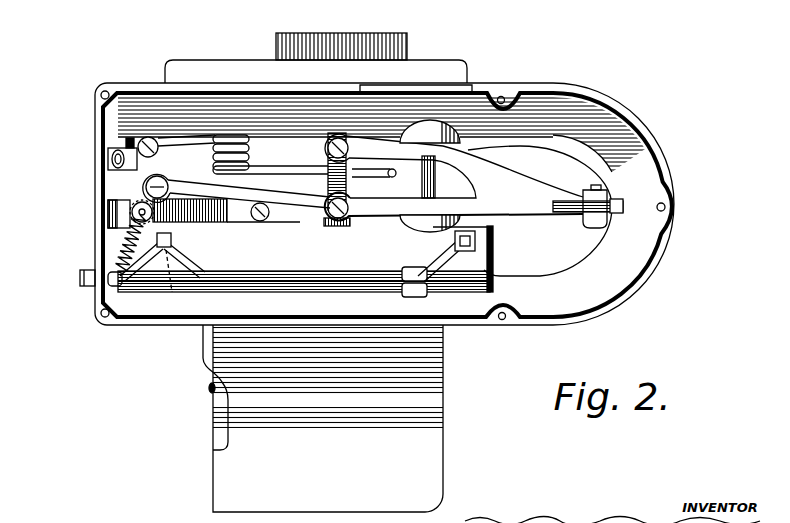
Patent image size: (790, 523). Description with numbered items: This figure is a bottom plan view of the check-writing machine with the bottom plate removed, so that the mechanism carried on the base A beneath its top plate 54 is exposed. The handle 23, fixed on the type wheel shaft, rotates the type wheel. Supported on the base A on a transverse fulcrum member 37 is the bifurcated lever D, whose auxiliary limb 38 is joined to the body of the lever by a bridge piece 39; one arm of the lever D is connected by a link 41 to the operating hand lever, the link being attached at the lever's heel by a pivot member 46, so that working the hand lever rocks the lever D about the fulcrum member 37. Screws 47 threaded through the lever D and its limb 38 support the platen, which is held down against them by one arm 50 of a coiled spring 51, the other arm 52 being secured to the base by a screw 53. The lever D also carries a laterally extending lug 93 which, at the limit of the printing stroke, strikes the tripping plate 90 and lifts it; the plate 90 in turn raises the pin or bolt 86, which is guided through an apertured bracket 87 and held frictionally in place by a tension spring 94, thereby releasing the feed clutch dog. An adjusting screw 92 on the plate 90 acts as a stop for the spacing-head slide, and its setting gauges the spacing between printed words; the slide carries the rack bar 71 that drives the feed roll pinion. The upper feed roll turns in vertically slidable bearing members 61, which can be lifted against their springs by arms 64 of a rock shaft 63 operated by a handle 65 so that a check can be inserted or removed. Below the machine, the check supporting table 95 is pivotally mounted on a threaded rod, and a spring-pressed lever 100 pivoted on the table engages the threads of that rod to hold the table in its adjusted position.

The handle 23 is at (282, 42).
The screws 47 is at (340, 146).
The screw 53 is at (128, 142).
The spring arm 52 is at (164, 150).
The coiled spring 51 is at (250, 158).
The spring arm 50 is at (297, 173).
The laterally extending lug 93 is at (181, 186).
The tripping plate 90 is at (250, 226).
The adjusting screw 92 is at (176, 229).
The pin or bolt 86 is at (136, 206).
The bracket 87 is at (118, 212).
The tension spring 94 is at (117, 244).
The handle 65 is at (90, 290).
The bridge piece 39 is at (476, 170).
The pivot member 46 is at (330, 203).
The lever D is at (507, 200).
The top plate 54 is at (555, 262).
The auxiliary limb 38 is at (410, 156).
The fulcrum member 37 is at (436, 178).
The link 41 is at (602, 196).
The rock shaft 63 is at (368, 276).
The arms 64 is at (442, 264).
The bearing members 61 is at (478, 244).
The rack bar 71 is at (164, 258).
The check supporting table 95 is at (448, 399).
The lever 100 is at (206, 340).
The base A is at (620, 263).